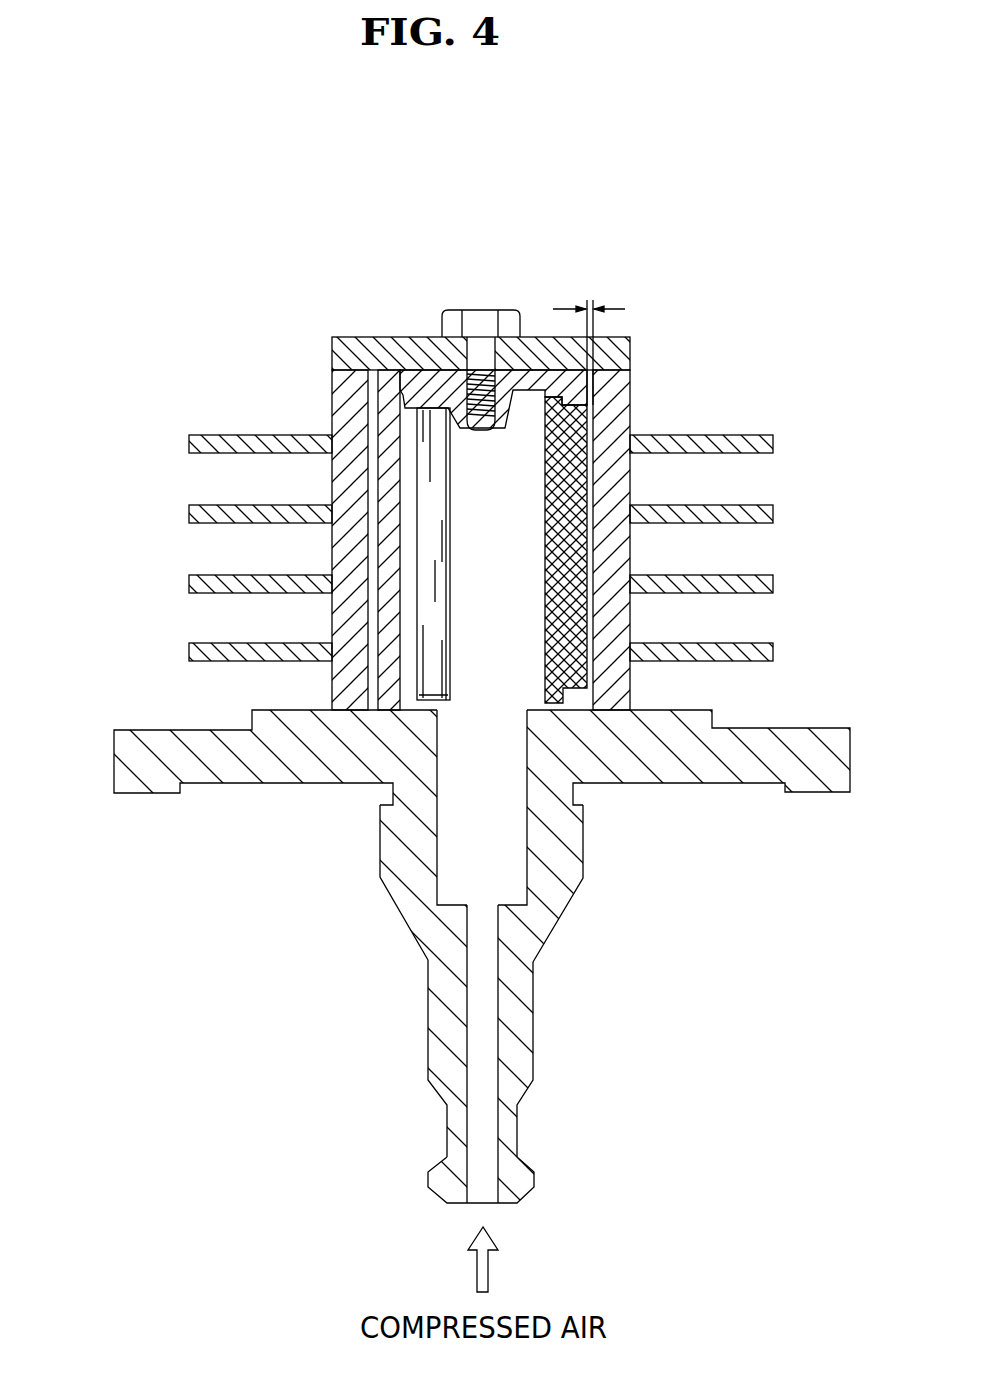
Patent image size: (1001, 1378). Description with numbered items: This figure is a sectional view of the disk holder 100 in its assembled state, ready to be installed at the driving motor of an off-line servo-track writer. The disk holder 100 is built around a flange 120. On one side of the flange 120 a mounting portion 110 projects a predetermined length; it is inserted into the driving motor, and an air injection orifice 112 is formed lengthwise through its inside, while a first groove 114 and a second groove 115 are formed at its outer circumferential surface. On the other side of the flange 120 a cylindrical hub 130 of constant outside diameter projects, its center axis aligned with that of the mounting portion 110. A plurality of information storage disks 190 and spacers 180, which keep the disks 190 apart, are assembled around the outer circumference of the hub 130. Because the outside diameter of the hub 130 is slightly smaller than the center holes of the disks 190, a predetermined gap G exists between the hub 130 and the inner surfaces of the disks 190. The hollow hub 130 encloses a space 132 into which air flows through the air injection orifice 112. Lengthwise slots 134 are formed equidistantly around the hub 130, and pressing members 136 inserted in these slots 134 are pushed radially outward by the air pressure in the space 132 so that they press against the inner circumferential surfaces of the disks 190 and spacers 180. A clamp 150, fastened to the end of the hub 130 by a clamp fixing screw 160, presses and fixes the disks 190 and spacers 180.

The disk holder 100 is at (150, 878).
The mounting portion 110 is at (442, 1032).
The air injection orifice 112 is at (483, 987).
The first groove 114 is at (517, 1125).
The second groove 115 is at (378, 800).
The flange 120 is at (114, 762).
The hub 130 is at (385, 410).
The space 132 is at (505, 645).
The slots 134 is at (597, 410).
The pressing members 136 is at (408, 395).
The clamp 150 is at (343, 337).
The clamp fixing screw 160 is at (482, 310).
The spacers 180 is at (343, 612).
The information storage disks 190 is at (190, 512).
The gap G is at (589, 337).